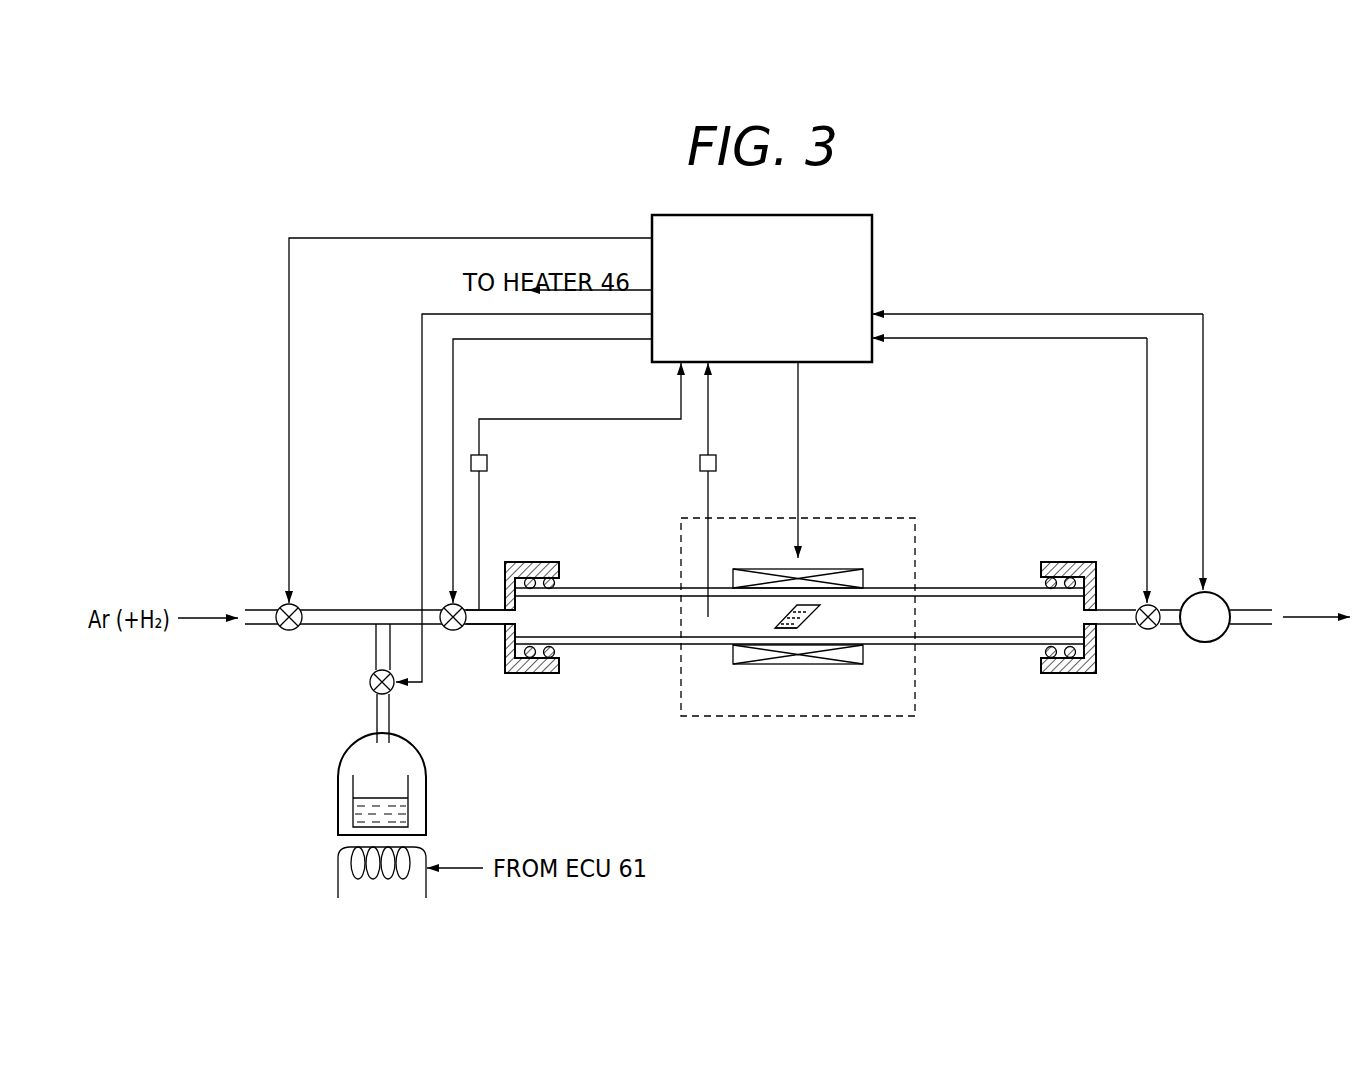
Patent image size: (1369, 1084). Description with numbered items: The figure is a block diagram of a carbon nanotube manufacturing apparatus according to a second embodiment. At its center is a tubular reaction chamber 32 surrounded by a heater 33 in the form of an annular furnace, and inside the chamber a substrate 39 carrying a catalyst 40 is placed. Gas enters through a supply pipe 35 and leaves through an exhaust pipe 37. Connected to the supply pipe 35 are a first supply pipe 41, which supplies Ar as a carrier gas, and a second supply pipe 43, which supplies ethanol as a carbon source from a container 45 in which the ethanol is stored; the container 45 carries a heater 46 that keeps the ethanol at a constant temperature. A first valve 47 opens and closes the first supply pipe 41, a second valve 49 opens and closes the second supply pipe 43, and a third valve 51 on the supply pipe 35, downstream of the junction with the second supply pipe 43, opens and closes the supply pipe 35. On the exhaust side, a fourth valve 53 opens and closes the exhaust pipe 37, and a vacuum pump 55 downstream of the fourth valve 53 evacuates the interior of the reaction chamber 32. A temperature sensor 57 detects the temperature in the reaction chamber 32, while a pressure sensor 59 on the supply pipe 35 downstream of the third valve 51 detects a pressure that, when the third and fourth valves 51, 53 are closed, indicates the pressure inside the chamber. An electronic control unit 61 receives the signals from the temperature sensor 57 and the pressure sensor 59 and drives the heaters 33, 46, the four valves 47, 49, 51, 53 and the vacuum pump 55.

The tubular reaction chamber 32 is at (978, 588).
The heater (annular furnace) 33 is at (838, 569).
The supply path (pipe) 35 is at (477, 627).
The exhaust path (pipe) 37 is at (1116, 608).
The substrate 39 is at (787, 630).
The catalyst 40 is at (826, 615).
The first supply pipe 41 is at (321, 608).
The second supply pipe 43 is at (373, 648).
The tank or container 45 is at (338, 782).
The heater 46 is at (338, 871).
The first valve 47 is at (284, 606).
The second valve 49 is at (370, 688).
The third valve 51 is at (445, 606).
The fourth valve 53 is at (1146, 635).
The vacuum pump 55 is at (1205, 642).
The temperature sensor 57 is at (717, 463).
The pressure sensor 59 is at (487, 463).
The electronic control unit 61 is at (872, 240).